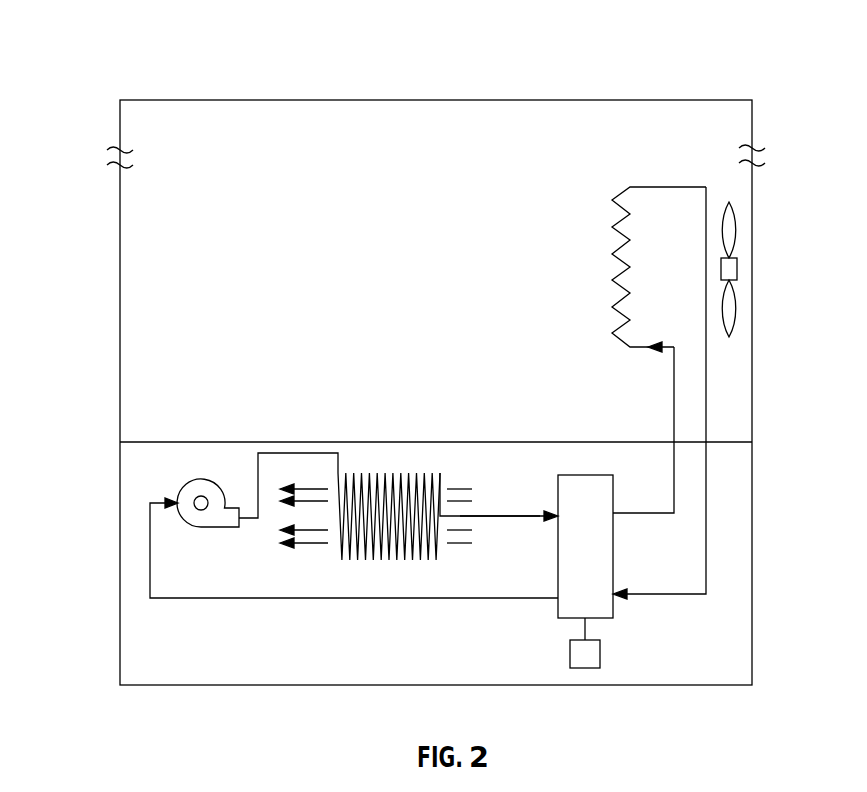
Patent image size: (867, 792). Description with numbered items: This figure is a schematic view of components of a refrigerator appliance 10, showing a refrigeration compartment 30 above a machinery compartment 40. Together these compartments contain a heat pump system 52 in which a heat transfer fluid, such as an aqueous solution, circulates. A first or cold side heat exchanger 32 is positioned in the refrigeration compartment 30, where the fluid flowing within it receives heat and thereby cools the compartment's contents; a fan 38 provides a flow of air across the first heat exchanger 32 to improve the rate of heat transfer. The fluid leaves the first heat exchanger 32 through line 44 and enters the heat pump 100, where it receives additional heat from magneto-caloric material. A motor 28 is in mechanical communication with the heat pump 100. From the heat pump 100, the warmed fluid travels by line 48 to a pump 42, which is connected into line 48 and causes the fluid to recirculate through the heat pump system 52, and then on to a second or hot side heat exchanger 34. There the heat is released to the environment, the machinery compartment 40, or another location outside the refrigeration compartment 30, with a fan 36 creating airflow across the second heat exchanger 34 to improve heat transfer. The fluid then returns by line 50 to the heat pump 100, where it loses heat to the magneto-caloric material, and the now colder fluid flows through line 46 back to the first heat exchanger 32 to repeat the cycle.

The refrigerator appliance 10 is at (84, 193).
The motor 28 is at (570, 652).
The refrigeration compartment 30 is at (464, 158).
The first or cold side heat exchanger 32 is at (612, 212).
The second or hot side heat exchanger 34 is at (408, 478).
The fan 36 is at (318, 489).
The fan 38 is at (735, 230).
The machinery compartment 40 is at (136, 464).
The pump 42 is at (201, 478).
The line 44 is at (706, 388).
The line 46 is at (674, 417).
The line 48 is at (288, 453).
The line 50 is at (497, 516).
The heat pump system 52 is at (392, 334).
The heat pump 100 is at (588, 466).